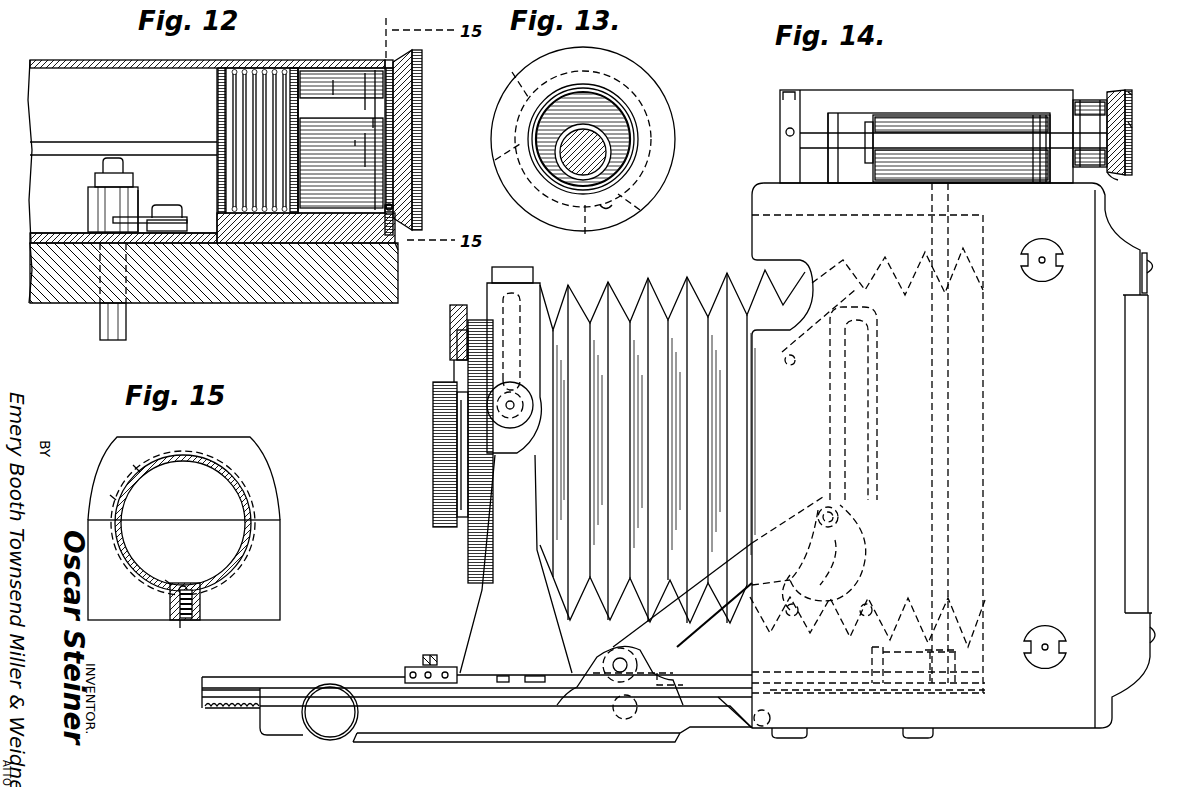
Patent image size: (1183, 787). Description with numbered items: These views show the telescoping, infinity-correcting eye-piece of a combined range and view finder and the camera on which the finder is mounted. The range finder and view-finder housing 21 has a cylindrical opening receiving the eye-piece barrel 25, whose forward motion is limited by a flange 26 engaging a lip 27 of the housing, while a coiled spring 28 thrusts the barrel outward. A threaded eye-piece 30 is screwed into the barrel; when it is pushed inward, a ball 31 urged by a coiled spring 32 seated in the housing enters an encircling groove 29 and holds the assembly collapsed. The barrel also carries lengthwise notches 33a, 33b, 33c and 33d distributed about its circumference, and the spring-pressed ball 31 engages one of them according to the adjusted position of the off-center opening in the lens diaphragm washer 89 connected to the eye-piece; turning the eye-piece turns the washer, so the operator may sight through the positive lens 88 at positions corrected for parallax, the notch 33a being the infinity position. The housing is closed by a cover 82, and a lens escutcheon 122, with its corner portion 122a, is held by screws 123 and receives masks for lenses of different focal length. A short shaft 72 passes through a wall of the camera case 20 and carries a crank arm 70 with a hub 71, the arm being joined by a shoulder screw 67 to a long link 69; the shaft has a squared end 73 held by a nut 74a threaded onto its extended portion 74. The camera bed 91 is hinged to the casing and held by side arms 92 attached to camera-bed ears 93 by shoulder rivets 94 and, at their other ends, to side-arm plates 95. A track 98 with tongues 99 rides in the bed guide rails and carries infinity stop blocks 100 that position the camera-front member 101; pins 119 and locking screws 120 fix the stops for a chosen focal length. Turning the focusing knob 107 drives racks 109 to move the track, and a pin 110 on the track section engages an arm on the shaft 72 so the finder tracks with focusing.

In FIG. 14, the camera case 20 is at (1073, 728).
In FIG. 12, the range finder and view-finder housing 21 is at (262, 280).
In FIG. 15, the range finder and view-finder housing 21 is at (265, 569).
In FIG. 12, the eye-piece barrel 25 is at (355, 143).
In FIG. 13, the eye-piece barrel 25 is at (640, 185).
In FIG. 14, the eye-piece barrel 25 is at (1085, 102).
In FIG. 15, the eye-piece barrel 25 is at (190, 458).
In FIG. 12, the flange 26 is at (298, 108).
In FIG. 12, the lip 27 is at (386, 62).
In FIG. 12, the coiled spring 28 is at (233, 110).
In FIG. 12, the encircling groove 29 is at (400, 99).
In FIG. 14, the encircling groove 29 is at (1118, 181).
In FIG. 12, the eye-piece 30 is at (418, 121).
In FIG. 13, the eye-piece 30 is at (660, 124).
In FIG. 14, the eye-piece 30 is at (1121, 92).
In FIG. 12, the ball 31 is at (396, 211).
In FIG. 14, the ball 31 is at (1015, 168).
In FIG. 15, the ball 31 is at (200, 600).
In FIG. 12, the coiled spring 32 is at (398, 252).
In FIG. 15, the coiled spring 32 is at (180, 622).
In FIG. 13, the notch 33a is at (640, 215).
In FIG. 15, the notch 33a is at (186, 586).
In FIG. 13, the notch 33b is at (599, 232).
In FIG. 15, the notch 33b is at (170, 588).
In FIG. 12, the notch 33c is at (375, 123).
In FIG. 13, the notch 33c is at (486, 158).
In FIG. 14, the notch 33c is at (1127, 125).
In FIG. 15, the notch 33c is at (112, 497).
In FIG. 12, the notch 33d is at (335, 92).
In FIG. 13, the notch 33d is at (504, 77).
In FIG. 14, the notch 33d is at (1127, 101).
In FIG. 15, the notch 33d is at (135, 465).
In FIG. 12, the shoulder screw 67 is at (172, 205).
In FIG. 12, the long link 69 is at (182, 222).
In FIG. 12, the crank arm 70 is at (140, 218).
In FIG. 12, the hub 71 is at (138, 195).
In FIG. 12, the short shaft 72 is at (100, 330).
In FIG. 14, the short shaft 72 is at (945, 480).
In FIG. 12, the squared end 73 is at (88, 212).
In FIG. 12, the extended portion 74 is at (114, 160).
In FIG. 12, the nut 74a is at (95, 180).
In FIG. 12, the cover 82 is at (95, 72).
In FIG. 14, the cover 82 is at (967, 98).
In FIG. 15, the cover 82 is at (253, 462).
In FIG. 13, the positive lens 88 is at (585, 170).
In FIG. 13, the lens diaphragm washer 89 is at (612, 115).
In FIG. 14, the camera bed 91 is at (493, 722).
In FIG. 14, the side arms 92 is at (680, 640).
In FIG. 14, the camera-bed ears 93 is at (597, 693).
In FIG. 14, the shoulder rivets 94 is at (617, 660).
In FIG. 14, the side-arm plates 95 is at (866, 587).
In FIG. 14, the track 98 is at (477, 681).
In FIG. 14, the tongues 99 is at (202, 691).
In FIG. 14, the infinity stop blocks 100 is at (427, 655).
In FIG. 14, the camera-front member 101 is at (487, 598).
In FIG. 14, the focusing knob 107 is at (330, 735).
In FIG. 14, the rack 109 is at (240, 710).
In FIG. 14, the pin 110 is at (868, 655).
In FIG. 14, the pins 119 is at (433, 655).
In FIG. 14, the locking screws 120 is at (405, 670).
In FIG. 14, the lens escutcheon 122 is at (781, 168).
In FIG. 14, the housing notch 122a is at (792, 92).
In FIG. 14, the screws 123 is at (786, 140).